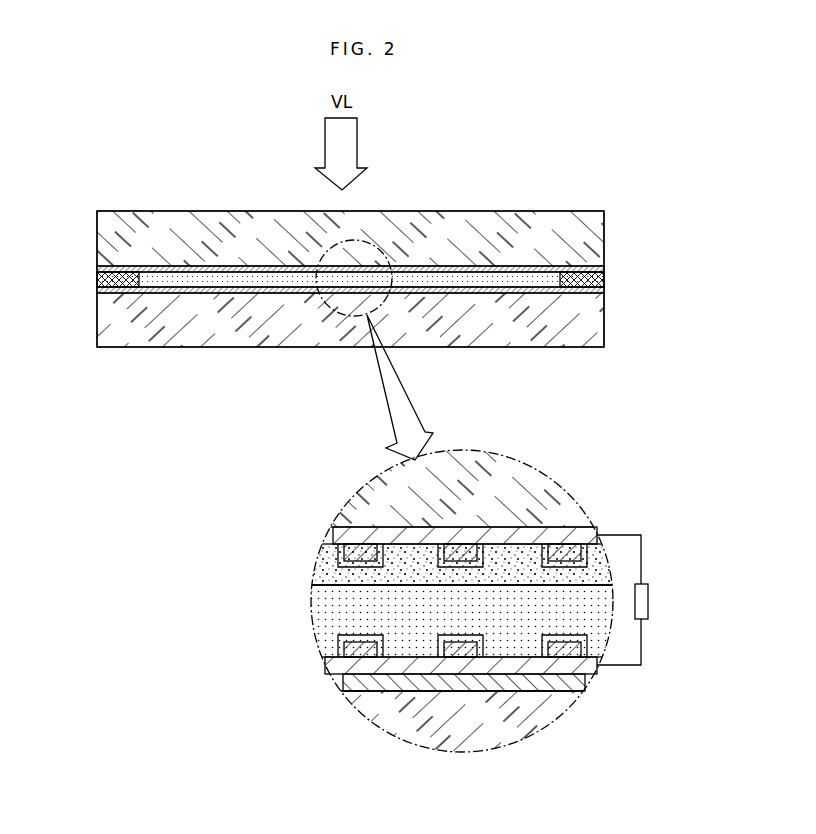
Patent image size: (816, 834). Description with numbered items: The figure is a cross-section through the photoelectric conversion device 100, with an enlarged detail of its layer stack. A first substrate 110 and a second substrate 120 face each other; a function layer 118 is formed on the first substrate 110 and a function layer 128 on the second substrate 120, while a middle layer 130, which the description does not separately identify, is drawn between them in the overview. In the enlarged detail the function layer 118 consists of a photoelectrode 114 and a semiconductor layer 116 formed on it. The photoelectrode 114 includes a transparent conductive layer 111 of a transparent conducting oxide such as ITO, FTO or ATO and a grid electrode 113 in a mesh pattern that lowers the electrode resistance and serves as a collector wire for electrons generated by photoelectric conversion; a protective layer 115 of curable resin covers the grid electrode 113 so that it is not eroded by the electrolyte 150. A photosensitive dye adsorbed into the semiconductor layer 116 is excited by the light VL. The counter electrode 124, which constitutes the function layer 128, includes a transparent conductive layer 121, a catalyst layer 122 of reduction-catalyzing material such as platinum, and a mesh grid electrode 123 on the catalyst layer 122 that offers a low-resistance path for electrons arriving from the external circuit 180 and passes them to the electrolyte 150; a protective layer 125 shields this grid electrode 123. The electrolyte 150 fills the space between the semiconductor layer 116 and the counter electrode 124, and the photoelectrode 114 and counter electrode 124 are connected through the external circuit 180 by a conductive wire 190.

The electrochromic device 100 is at (502, 168).
The first substrate 110 is at (597, 233).
The second substrate 120 is at (597, 320).
The function layer 118 is at (604, 268).
The function layer 128 is at (604, 290).
The electrolyte layer 130 is at (604, 280).
The transparent conductive layer 111 is at (333, 531).
The grid electrode 113 is at (338, 548).
The photoelectrode 114 is at (401, 530).
The protective layer 115 is at (340, 562).
The semiconductor layer 116 is at (330, 575).
The protective layer 125 is at (340, 647).
The grid electrode 123 is at (335, 663).
The catalyst layer 122 is at (345, 681).
The transparent conductive layer 121 is at (340, 694).
The counter electrode 124 is at (412, 680).
The electrolyte 150 is at (420, 637).
The external circuit 180 is at (648, 601).
The conductive wire 190 is at (641, 535).